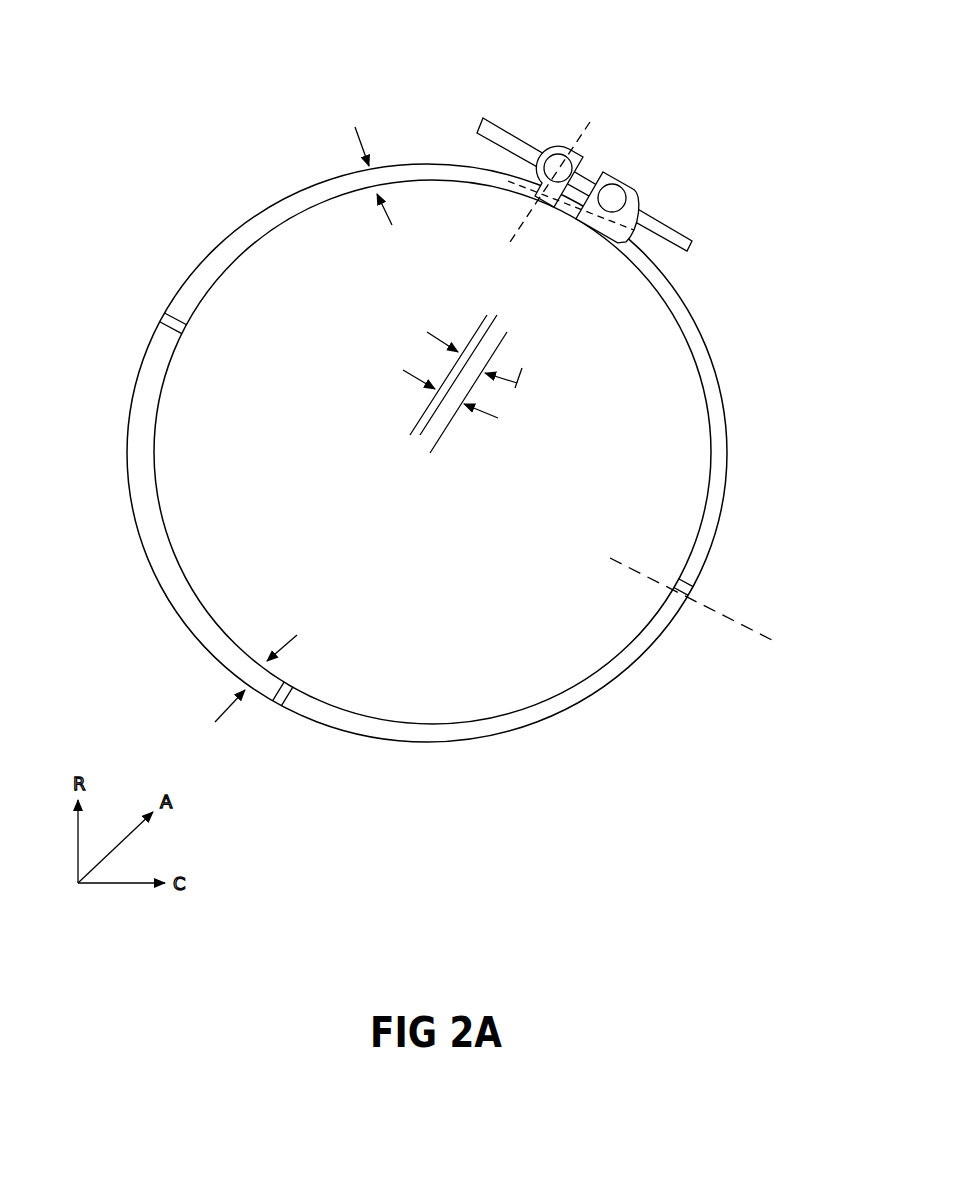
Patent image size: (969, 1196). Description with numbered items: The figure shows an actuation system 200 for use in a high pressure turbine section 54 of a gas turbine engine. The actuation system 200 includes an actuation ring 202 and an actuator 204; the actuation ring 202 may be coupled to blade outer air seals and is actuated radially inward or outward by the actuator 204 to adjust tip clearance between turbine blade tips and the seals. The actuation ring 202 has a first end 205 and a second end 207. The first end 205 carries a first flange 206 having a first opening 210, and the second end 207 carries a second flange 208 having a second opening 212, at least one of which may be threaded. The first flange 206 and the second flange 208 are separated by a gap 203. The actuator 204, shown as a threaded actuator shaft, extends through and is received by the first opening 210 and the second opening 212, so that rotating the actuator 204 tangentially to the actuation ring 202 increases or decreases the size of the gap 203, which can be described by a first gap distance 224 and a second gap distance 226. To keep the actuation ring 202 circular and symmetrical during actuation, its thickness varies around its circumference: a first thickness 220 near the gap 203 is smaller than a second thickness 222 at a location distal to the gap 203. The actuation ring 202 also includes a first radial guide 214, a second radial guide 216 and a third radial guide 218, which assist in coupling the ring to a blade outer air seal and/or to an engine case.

The high pressure turbine section 54 is at (215, 51).
The actuation system 200 is at (145, 145).
The actuation ring 202 is at (127, 447).
The gap 203 is at (565, 208).
The actuator 204 is at (672, 246).
The first end 205 is at (543, 202).
The first flange 206 is at (508, 168).
The second end 207 is at (592, 218).
The second flange 208 is at (628, 192).
The first opening 210 is at (538, 176).
The second opening 212 is at (607, 193).
The first radial guide 214 is at (686, 603).
The second radial guide 216 is at (278, 709).
The third radial guide 218 is at (163, 308).
The first thickness 220 is at (381, 190).
The second thickness 222 is at (266, 666).
The first gap distance 224 is at (498, 418).
The second gap distance 226 is at (478, 384).